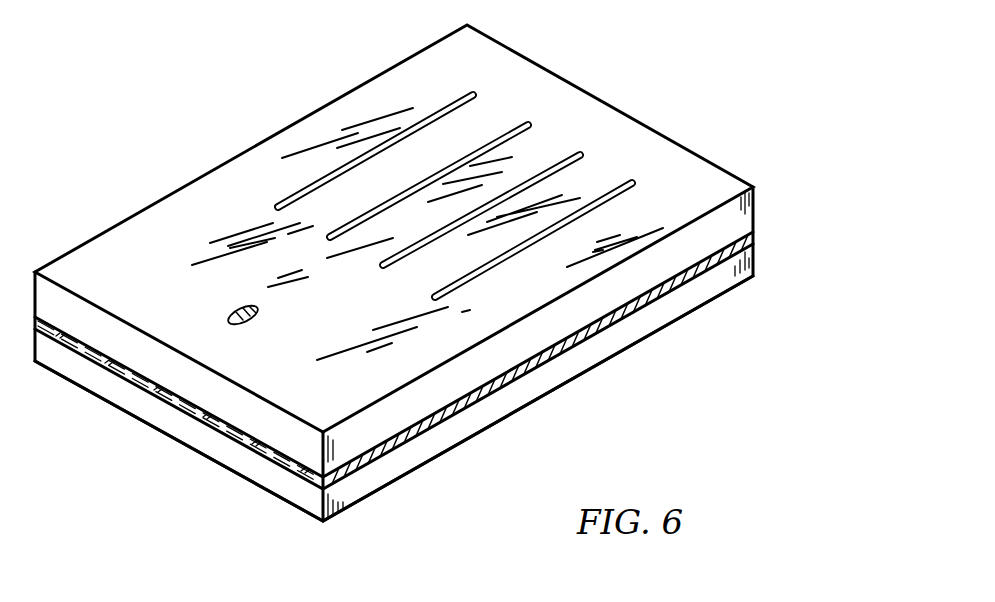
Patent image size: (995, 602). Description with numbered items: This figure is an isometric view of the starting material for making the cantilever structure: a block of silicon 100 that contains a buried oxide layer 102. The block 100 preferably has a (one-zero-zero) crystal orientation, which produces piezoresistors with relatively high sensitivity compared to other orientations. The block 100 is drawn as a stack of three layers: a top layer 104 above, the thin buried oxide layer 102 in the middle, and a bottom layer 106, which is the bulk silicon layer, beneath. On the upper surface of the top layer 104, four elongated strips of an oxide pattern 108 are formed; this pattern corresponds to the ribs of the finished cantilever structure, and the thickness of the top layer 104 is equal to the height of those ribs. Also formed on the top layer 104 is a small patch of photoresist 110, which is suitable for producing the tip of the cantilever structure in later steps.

The block of silicon 100 is at (772, 167).
The buried oxide layer 102 is at (748, 257).
The top layer 104 is at (388, 423).
The bottom layer 106 is at (550, 381).
The oxide pattern 108 is at (473, 95).
The photoresist 110 is at (237, 310).